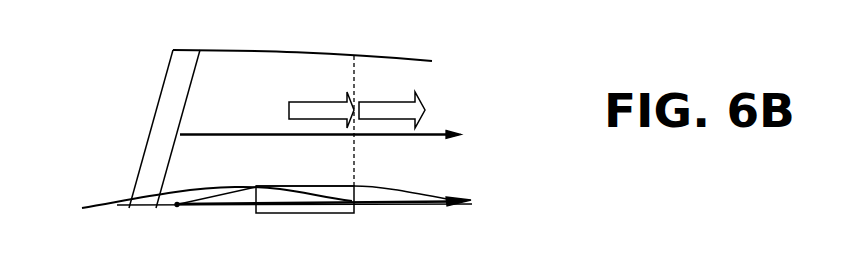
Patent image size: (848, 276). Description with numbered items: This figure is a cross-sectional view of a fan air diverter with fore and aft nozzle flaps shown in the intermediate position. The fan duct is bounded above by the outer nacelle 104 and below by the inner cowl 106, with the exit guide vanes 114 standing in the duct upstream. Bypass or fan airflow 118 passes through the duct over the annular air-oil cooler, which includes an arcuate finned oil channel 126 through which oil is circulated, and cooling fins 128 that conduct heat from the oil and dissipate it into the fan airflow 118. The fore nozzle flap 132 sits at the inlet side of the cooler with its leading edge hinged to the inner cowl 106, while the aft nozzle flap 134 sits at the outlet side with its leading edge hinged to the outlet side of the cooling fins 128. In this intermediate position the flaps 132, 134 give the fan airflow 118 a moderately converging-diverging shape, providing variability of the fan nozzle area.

The outer nacelle 104 is at (408, 59).
The inner cowl 106 is at (438, 205).
The exit guide vanes 114 is at (170, 65).
The fan airflow 118 is at (190, 204).
The finned oil channel 126 is at (328, 213).
The cooling fins 128 is at (260, 187).
The fore nozzle flap 132 is at (219, 197).
The aft nozzle flap 134 is at (388, 189).